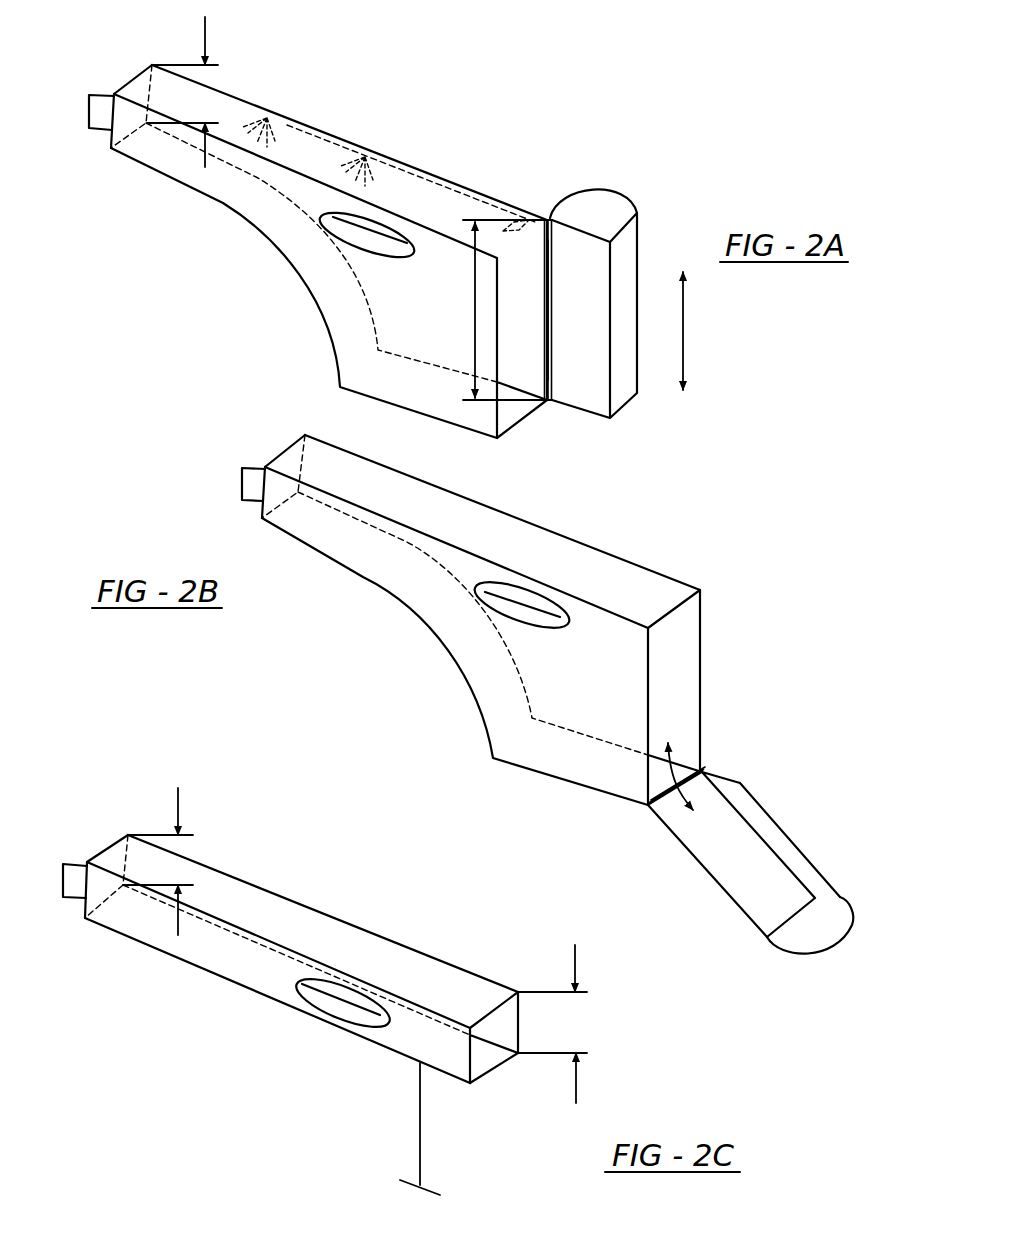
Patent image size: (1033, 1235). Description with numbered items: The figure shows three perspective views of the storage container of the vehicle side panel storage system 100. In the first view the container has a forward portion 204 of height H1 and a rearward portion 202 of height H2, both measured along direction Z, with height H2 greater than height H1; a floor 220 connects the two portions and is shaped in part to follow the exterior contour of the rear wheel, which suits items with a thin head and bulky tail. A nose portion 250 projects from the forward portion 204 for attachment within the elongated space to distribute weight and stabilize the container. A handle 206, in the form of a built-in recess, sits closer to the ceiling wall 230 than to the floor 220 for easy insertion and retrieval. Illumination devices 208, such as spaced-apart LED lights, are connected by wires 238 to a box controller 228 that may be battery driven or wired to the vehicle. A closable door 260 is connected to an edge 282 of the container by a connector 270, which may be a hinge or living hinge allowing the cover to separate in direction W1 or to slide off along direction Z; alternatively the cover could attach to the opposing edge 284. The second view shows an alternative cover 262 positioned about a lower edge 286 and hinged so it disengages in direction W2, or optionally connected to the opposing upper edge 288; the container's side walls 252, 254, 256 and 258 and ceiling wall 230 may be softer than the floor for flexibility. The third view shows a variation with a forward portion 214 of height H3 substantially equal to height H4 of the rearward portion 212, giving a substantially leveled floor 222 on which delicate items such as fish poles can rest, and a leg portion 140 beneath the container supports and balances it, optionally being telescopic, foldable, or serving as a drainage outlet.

In FIG. 2A, the storage system 100 is at (185, 300).
In FIG. 2B, the storage system 100 is at (327, 608).
In FIG. 2C, the storage system 100 is at (192, 1078).
In FIG. 2A, the rearward portion 202 is at (513, 187).
In FIG. 2A, the forward portion 204 is at (160, 53).
In FIG. 2A, the handle 206 is at (362, 238).
In FIG. 2A, the illumination devices 208 is at (350, 152).
In FIG. 2A, the floor 220 is at (257, 197).
In FIG. 2A, the box controller 228 is at (523, 228).
In FIG. 2A, the ceiling wall 230 is at (420, 195).
In FIG. 2A, the wires 238 is at (395, 168).
In FIG. 2A, the nose portion 250 is at (80, 118).
In FIG. 2B, the side wall 252 is at (292, 448).
In FIG. 2B, the side wall 254 is at (682, 672).
In FIG. 2B, the side wall 256 is at (623, 590).
In FIG. 2B, the side wall 258 is at (555, 663).
In FIG. 2A, the closable door 260 is at (627, 407).
In FIG. 2B, the cover 262 is at (813, 948).
In FIG. 2A, the connector 270 is at (548, 403).
In FIG. 2A, the edge 282 is at (553, 327).
In FIG. 2A, the edge 284 is at (498, 358).
In FIG. 2B, the lower edge 286 is at (663, 805).
In FIG. 2B, the upper edge 288 is at (672, 615).
In FIG. 2C, the rearward portion 212 is at (480, 968).
In FIG. 2C, the forward portion 214 is at (218, 858).
In FIG. 2C, the floor 222 is at (230, 967).
In FIG. 2C, the leg portion 140 is at (428, 1132).
In FIG. 2A, the height of forward portion H1 is at (191, 86).
In FIG. 2A, the height of rearward portion H2 is at (498, 310).
In FIG. 2C, the height of forward portion H3 is at (158, 844).
In FIG. 2C, the height of rearward portion H4 is at (556, 1024).
In FIG. 2A, the direction W1 is at (580, 293).
In FIG. 2B, the direction W2 is at (677, 759).
In FIG. 2A, the direction Z is at (695, 331).